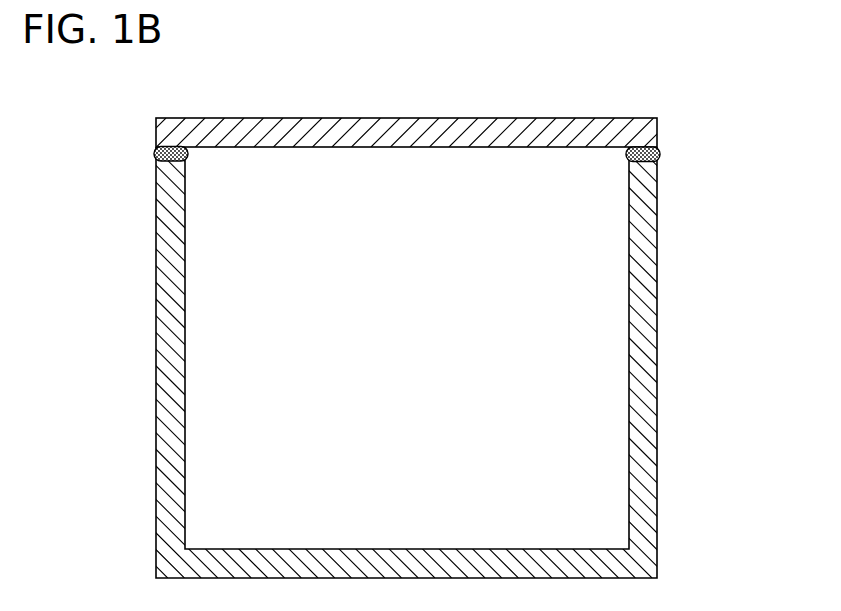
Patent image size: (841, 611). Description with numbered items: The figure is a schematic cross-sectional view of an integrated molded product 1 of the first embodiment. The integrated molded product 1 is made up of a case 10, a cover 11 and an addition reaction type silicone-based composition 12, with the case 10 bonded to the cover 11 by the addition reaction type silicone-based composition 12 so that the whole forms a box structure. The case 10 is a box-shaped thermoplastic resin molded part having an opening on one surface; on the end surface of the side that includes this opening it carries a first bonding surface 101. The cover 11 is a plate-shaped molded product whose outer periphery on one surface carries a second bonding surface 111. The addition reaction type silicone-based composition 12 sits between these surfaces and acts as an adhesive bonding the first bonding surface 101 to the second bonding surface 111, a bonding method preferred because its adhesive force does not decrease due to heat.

The integrated molded product 1 is at (613, 64).
The case 10 is at (158, 288).
The cover 11 is at (530, 138).
The addition reaction type silicone-based composition 12 is at (155, 155).
The first bonding surface 101 is at (172, 172).
The second bonding surface 111 is at (170, 142).